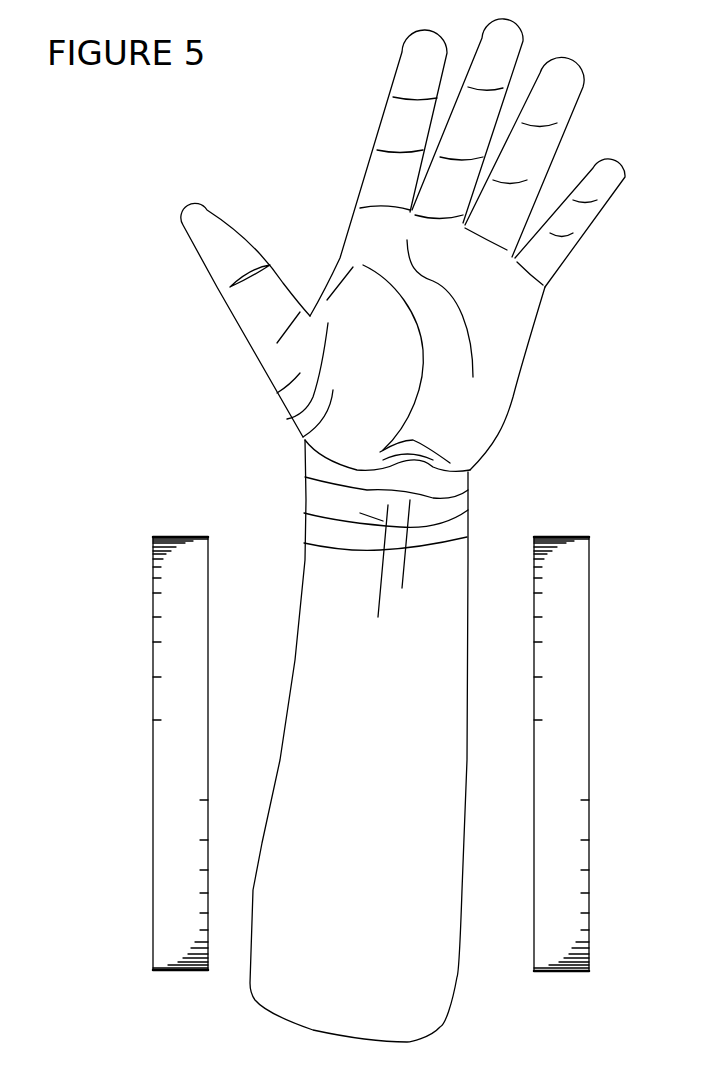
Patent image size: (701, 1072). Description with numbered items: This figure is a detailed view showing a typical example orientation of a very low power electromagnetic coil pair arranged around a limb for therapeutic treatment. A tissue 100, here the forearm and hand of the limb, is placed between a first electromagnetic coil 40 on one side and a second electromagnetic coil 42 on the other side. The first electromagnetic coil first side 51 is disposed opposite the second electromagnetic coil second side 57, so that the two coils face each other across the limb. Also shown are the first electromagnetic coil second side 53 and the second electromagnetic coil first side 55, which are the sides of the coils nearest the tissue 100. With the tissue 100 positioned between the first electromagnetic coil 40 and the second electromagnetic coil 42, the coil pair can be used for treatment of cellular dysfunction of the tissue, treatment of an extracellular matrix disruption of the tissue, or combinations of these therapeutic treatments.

The tissue 100 is at (497, 372).
The first electromagnetic coil 40 is at (153, 970).
The second electromagnetic coil 42 is at (534, 971).
The first electromagnetic coil first side 51 is at (153, 627).
The first electromagnetic coil second side 53 is at (208, 627).
The second electromagnetic coil first side 55 is at (534, 627).
The second electromagnetic coil second side 57 is at (589, 627).